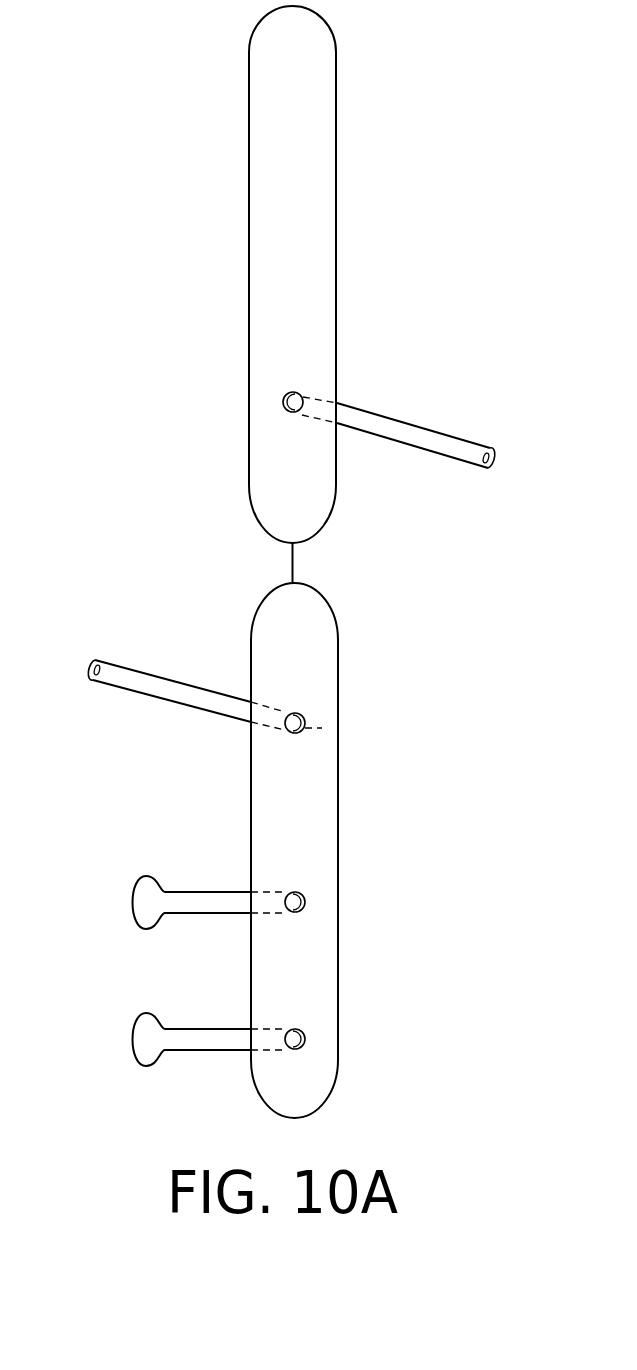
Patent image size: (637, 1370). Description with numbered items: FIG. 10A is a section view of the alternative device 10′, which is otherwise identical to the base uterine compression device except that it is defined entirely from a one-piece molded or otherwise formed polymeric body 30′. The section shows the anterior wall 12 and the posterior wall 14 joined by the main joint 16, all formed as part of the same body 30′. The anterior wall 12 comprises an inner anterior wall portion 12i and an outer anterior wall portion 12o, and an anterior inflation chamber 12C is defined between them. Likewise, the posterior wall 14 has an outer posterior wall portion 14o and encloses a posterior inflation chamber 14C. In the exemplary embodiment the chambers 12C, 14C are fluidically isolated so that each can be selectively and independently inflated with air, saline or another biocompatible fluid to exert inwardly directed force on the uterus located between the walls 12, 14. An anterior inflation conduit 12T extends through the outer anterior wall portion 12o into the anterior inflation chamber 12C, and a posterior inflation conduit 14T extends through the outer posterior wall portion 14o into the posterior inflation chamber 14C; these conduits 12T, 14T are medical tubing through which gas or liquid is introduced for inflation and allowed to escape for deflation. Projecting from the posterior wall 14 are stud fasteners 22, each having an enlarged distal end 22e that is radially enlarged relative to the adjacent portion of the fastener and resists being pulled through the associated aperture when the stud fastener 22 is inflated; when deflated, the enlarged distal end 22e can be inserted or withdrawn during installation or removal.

The device 10′ is at (224, 143).
The one-piece molded polymeric body 30′ is at (224, 229).
The anterior wall 12 is at (337, 166).
The inner anterior wall portion 12i is at (249, 338).
The outer anterior wall portion 12o is at (337, 338).
The anterior inflation chamber 12C is at (318, 252).
The anterior inflation conduit 12T is at (303, 400).
The main joint 16 is at (293, 566).
The posterior wall 14 is at (338, 852).
The outer posterior wall portion 14o is at (338, 972).
The posterior inflation chamber 14C is at (318, 798).
The posterior inflation conduit 14T is at (146, 672).
The stud fastener 22 is at (305, 903).
The enlarged distal end 22e is at (131, 905).